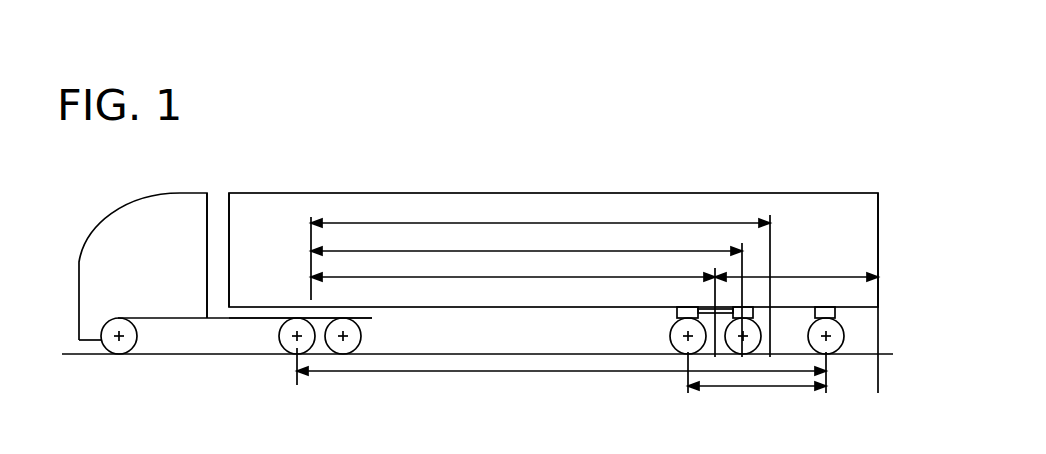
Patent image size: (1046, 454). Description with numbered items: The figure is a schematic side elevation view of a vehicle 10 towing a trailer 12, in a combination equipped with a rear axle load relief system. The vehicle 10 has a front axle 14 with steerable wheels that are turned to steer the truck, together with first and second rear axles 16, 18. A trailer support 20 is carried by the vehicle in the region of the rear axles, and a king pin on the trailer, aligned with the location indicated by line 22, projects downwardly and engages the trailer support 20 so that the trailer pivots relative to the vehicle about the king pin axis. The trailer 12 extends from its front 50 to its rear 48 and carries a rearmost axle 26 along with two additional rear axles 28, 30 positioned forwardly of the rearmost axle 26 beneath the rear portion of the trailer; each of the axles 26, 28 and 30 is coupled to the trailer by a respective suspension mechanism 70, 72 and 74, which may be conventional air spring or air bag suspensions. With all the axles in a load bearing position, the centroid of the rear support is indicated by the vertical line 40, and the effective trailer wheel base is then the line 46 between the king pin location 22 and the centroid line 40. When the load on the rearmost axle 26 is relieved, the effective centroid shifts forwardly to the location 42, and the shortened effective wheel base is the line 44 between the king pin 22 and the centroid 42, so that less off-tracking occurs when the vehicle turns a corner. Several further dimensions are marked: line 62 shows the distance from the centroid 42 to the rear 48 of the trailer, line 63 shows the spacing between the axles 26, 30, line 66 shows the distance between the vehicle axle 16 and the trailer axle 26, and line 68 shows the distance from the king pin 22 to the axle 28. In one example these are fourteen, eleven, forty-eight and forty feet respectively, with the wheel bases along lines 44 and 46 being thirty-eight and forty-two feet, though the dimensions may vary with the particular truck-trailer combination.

The vehicle 10 is at (105, 302).
The trailer 12 is at (494, 215).
The front axle 14 is at (133, 345).
The first rear axle 16 is at (297, 345).
The second rear axle 18 is at (348, 345).
The trailer support 20 is at (310, 314).
The king pin location line 22 is at (311, 270).
The rearmost axle 26 is at (835, 340).
The rear axle 28 is at (743, 348).
The rear axle 30 is at (677, 343).
The centroid line 40 is at (780, 236).
The shifted centroid location 42 is at (703, 290).
The effective wheel base line 44 is at (608, 277).
The wheel base line 46 is at (445, 223).
The trailer rear 48 is at (878, 228).
The trailer front 50 is at (229, 212).
The centroid-to-rear distance line 62 is at (838, 277).
The axle spacing line 63 is at (748, 388).
The axle-to-axle distance line 66 is at (497, 372).
The king pin to axle distance line 68 is at (547, 250).
The suspension mechanism 70 is at (665, 316).
The suspension mechanism 72 is at (760, 301).
The suspension mechanism 74 is at (851, 318).